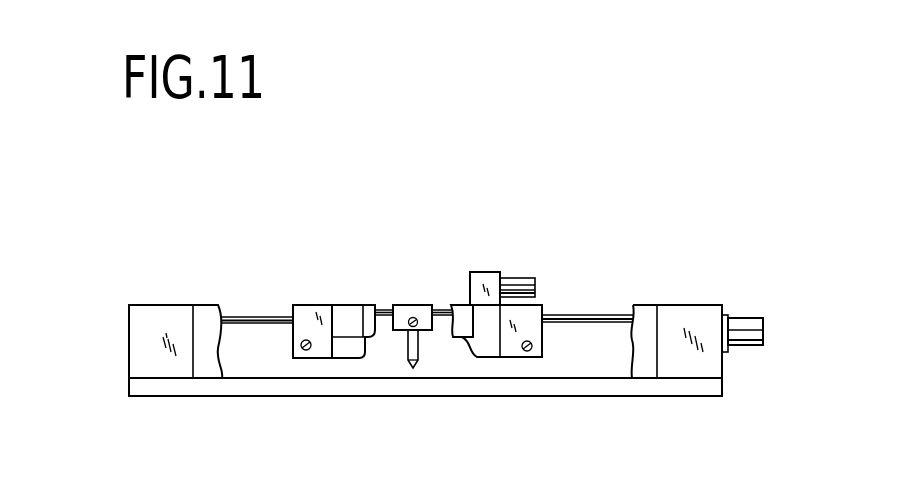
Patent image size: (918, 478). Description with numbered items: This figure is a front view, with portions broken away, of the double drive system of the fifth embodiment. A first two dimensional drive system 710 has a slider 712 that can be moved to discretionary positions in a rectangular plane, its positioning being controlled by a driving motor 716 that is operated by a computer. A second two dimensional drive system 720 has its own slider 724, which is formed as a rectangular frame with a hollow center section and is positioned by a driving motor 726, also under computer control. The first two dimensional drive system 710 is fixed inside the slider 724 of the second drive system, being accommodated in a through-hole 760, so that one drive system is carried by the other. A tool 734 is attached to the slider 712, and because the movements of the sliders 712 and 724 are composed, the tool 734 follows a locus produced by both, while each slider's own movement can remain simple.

The first two dimensional drive system 710 is at (349, 304).
The slider 712 is at (412, 303).
The driving motor 716 is at (520, 280).
The second two dimensional drive system 720 is at (129, 327).
The slider 724 is at (303, 310).
The driving motor 726 is at (747, 323).
The tool 734 is at (410, 350).
The through-hole 760 is at (567, 365).